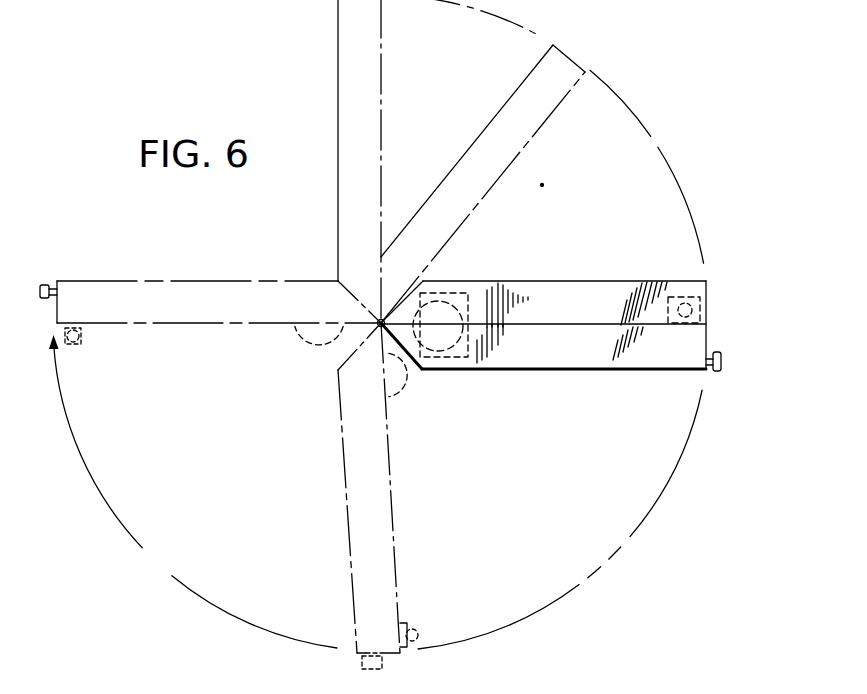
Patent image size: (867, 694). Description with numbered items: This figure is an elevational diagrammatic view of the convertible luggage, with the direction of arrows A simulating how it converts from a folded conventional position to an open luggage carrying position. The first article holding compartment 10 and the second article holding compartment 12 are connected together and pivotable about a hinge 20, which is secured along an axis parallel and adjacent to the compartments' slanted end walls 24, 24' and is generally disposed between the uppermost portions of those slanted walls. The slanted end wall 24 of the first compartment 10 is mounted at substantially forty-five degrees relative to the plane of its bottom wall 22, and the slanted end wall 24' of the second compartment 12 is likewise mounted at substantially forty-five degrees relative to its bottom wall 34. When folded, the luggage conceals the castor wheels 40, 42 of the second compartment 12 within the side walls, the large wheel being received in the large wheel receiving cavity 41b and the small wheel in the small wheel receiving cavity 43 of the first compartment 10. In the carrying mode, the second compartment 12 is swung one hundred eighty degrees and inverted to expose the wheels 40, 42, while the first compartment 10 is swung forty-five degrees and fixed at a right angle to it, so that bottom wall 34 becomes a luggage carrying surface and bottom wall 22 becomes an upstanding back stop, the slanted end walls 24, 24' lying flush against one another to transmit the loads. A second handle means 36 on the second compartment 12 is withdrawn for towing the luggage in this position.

The first article holding compartment 10 is at (484, 184).
The second article holding compartment 12 is at (381, 434).
The hinge 20 is at (379, 326).
The bottom wall 22 is at (338, 63).
The slanted end wall 24 is at (438, 277).
The slanted end wall 24' is at (417, 370).
The bottom wall 34 is at (188, 281).
The second handle means 36 is at (728, 351).
The castor wheel 40 is at (300, 335).
The large wheel receiving cavity 41b is at (467, 300).
The castor wheel 42 is at (212, 0).
The small wheel receiving cavity 43 is at (683, 297).
The arrows A is at (189, 491).